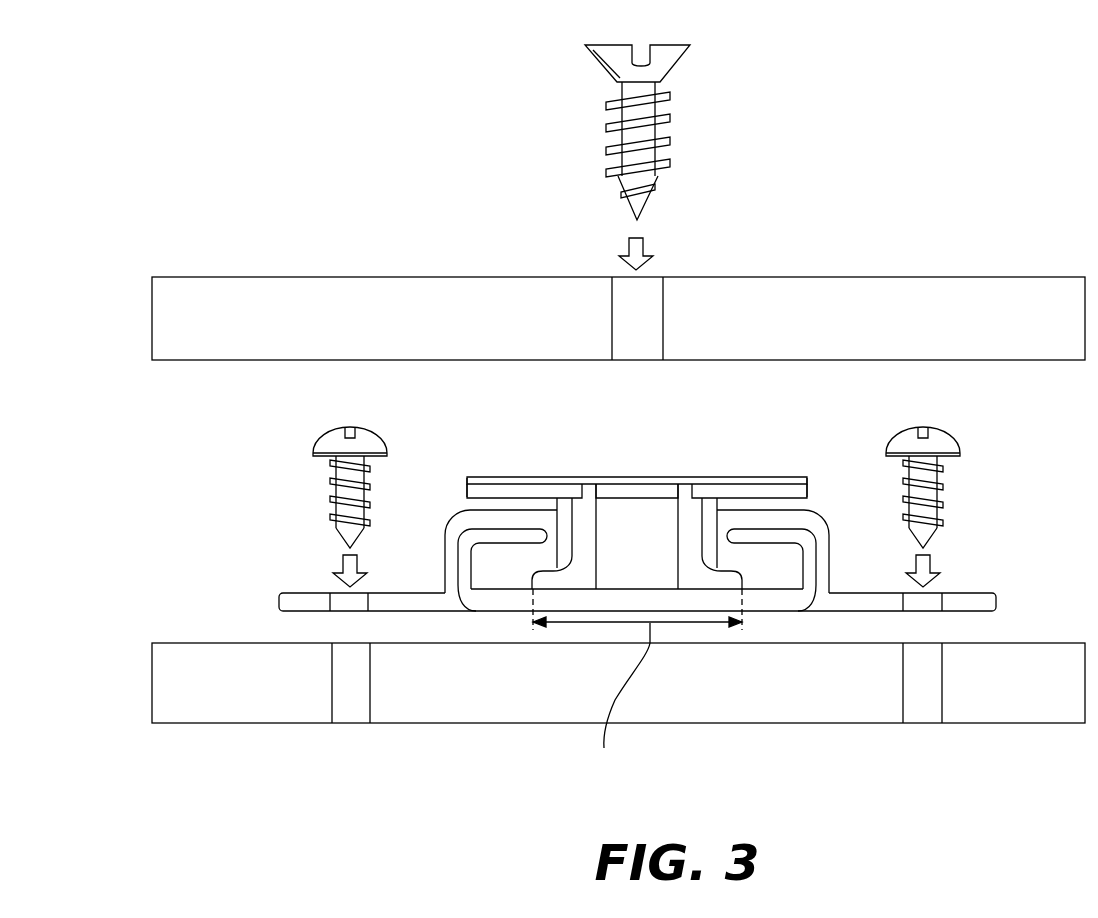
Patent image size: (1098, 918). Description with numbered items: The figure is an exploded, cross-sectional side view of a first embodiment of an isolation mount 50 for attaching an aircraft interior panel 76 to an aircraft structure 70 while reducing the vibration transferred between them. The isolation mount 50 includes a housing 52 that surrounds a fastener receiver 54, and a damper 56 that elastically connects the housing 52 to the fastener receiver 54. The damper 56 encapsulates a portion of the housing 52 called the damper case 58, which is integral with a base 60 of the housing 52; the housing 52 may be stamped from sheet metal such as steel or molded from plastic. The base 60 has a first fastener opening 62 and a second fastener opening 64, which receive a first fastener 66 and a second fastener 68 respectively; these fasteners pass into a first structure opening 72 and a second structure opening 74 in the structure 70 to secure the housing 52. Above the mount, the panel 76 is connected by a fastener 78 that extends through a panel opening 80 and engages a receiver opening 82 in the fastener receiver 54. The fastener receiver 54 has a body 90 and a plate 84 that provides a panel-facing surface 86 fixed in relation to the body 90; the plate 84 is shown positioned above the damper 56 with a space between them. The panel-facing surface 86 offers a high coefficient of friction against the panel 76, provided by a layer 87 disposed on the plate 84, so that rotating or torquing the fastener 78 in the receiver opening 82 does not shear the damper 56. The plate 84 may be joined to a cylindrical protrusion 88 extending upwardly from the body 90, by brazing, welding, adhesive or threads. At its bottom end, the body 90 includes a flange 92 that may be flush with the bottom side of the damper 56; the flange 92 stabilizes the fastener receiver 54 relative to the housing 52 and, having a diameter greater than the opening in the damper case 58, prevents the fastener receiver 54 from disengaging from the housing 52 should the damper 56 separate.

The isolation mount 50 is at (752, 427).
The housing 52 is at (851, 590).
The fastener receiver 54 is at (689, 524).
The damper 56 is at (458, 511).
The damper case 58 is at (820, 537).
The base 60 is at (1000, 594).
The first fastener opening 62 is at (338, 593).
The second fastener opening 64 is at (927, 594).
The first fastener 66 is at (332, 484).
The second fastener 68 is at (940, 505).
The structure 70 is at (463, 724).
The first structure opening 72 is at (343, 724).
The second structure opening 74 is at (922, 724).
The panel 76 is at (942, 277).
The fastener 78 is at (608, 140).
The panel opening 80 is at (648, 298).
The receiver opening 82 is at (630, 522).
The plate 84 is at (512, 483).
The panel-facing surface 86 is at (537, 476).
The layer 87 is at (466, 480).
The cylindrical protrusion 88 is at (685, 482).
The body 90 is at (587, 578).
The flange 92 is at (717, 588).